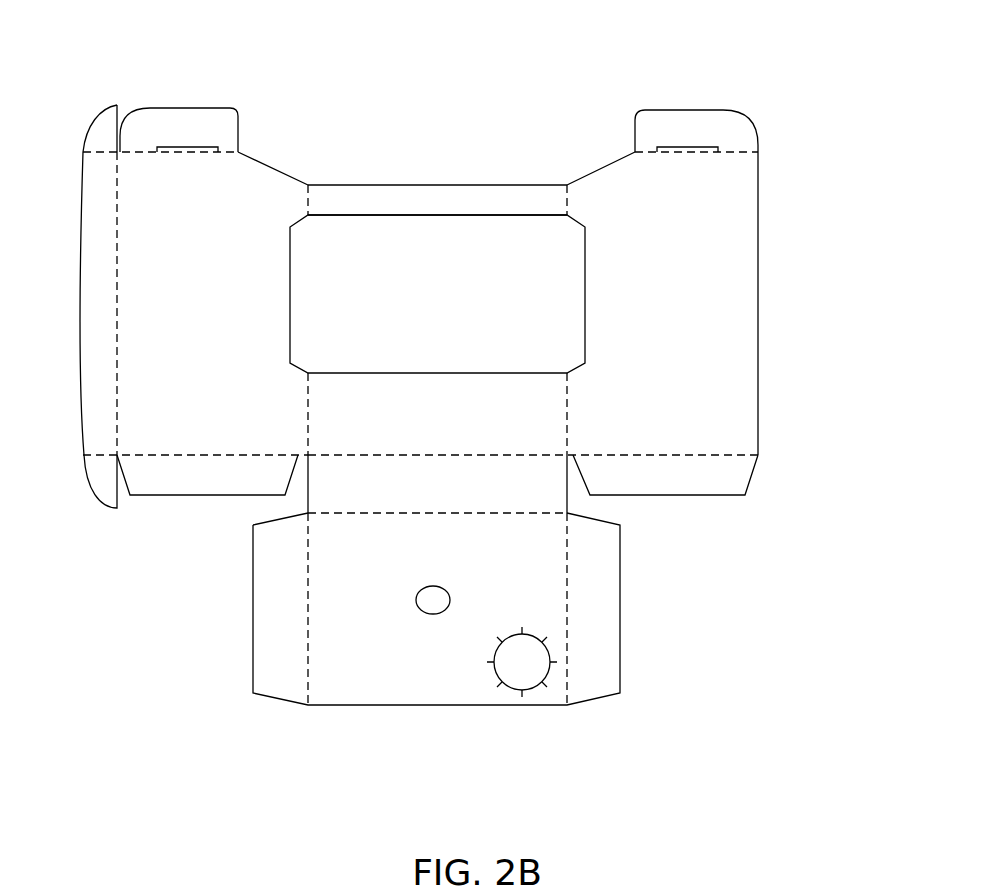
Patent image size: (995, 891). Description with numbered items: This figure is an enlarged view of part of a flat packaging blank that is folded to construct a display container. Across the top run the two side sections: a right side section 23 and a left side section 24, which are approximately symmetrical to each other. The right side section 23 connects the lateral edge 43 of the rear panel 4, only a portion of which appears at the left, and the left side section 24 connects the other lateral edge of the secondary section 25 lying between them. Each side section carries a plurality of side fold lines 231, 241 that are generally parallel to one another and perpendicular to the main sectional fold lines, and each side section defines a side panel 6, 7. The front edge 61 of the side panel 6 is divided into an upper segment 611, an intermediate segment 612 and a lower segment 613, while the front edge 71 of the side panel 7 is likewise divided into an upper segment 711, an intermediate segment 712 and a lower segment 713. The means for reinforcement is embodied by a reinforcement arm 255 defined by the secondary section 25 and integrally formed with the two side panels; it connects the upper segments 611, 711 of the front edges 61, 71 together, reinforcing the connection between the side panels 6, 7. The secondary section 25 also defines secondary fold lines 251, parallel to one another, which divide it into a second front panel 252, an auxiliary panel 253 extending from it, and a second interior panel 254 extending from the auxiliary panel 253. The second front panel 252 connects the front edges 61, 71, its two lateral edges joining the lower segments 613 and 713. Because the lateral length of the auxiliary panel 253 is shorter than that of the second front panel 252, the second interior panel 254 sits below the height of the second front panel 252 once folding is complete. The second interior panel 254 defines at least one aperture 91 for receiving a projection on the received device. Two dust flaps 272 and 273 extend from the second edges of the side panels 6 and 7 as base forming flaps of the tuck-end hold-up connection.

The rear panel 4 is at (102, 193).
The side panel 6 is at (183, 297).
The lateral edge 43 is at (117, 380).
The right side section 23 is at (195, 70).
The side fold lines 231 is at (222, 152).
The left side section 24 is at (712, 85).
The side fold lines 241 is at (650, 152).
The side panel 7 is at (620, 173).
The secondary section 25 is at (480, 158).
The reinforcement arm 255 is at (503, 202).
The front edge 61 is at (437, 241).
The upper segment 611 is at (310, 202).
The intermediate segment 612 is at (290, 280).
The lower segment 613 is at (308, 390).
The front edge 71 is at (719, 300).
The upper segment 711 is at (567, 202).
The intermediate segment 712 is at (585, 296).
The lower segment 713 is at (567, 398).
The second front panel 252 is at (478, 427).
The secondary fold lines 251 is at (538, 455).
The auxiliary panel 253 is at (335, 482).
The second interior panel 254 is at (395, 685).
The aperture 91 is at (507, 690).
The dust flap 272 is at (218, 483).
The dust flap 273 is at (730, 487).